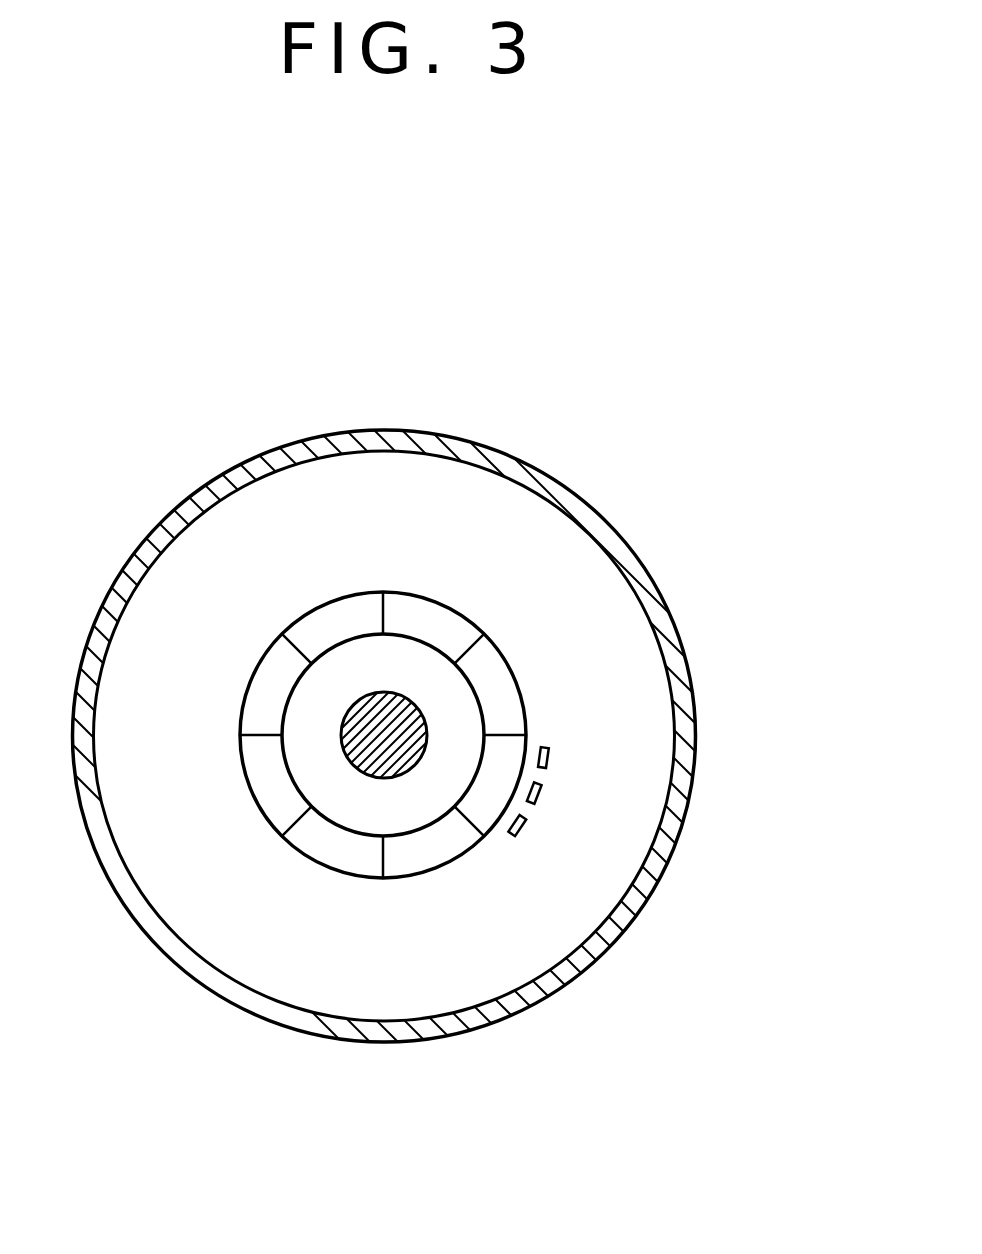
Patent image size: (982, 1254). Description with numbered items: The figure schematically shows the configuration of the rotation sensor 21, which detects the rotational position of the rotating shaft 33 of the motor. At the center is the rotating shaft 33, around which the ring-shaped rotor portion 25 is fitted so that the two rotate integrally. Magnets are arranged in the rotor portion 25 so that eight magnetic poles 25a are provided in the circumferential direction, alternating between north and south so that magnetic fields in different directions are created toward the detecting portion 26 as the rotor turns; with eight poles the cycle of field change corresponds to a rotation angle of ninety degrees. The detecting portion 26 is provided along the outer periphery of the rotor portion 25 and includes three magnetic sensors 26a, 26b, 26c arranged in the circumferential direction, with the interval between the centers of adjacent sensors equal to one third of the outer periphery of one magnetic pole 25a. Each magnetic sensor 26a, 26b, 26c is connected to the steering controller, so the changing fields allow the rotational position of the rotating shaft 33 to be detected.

The rotation sensor 21 is at (620, 427).
The rotor portion 25 is at (424, 711).
The magnetic pole 25a is at (453, 610).
The detecting portion 26 is at (693, 820).
The magnetic sensor 26a is at (551, 756).
The magnetic sensor 26b is at (543, 798).
The magnetic sensor 26c is at (527, 827).
The rotating shaft 33 is at (357, 770).